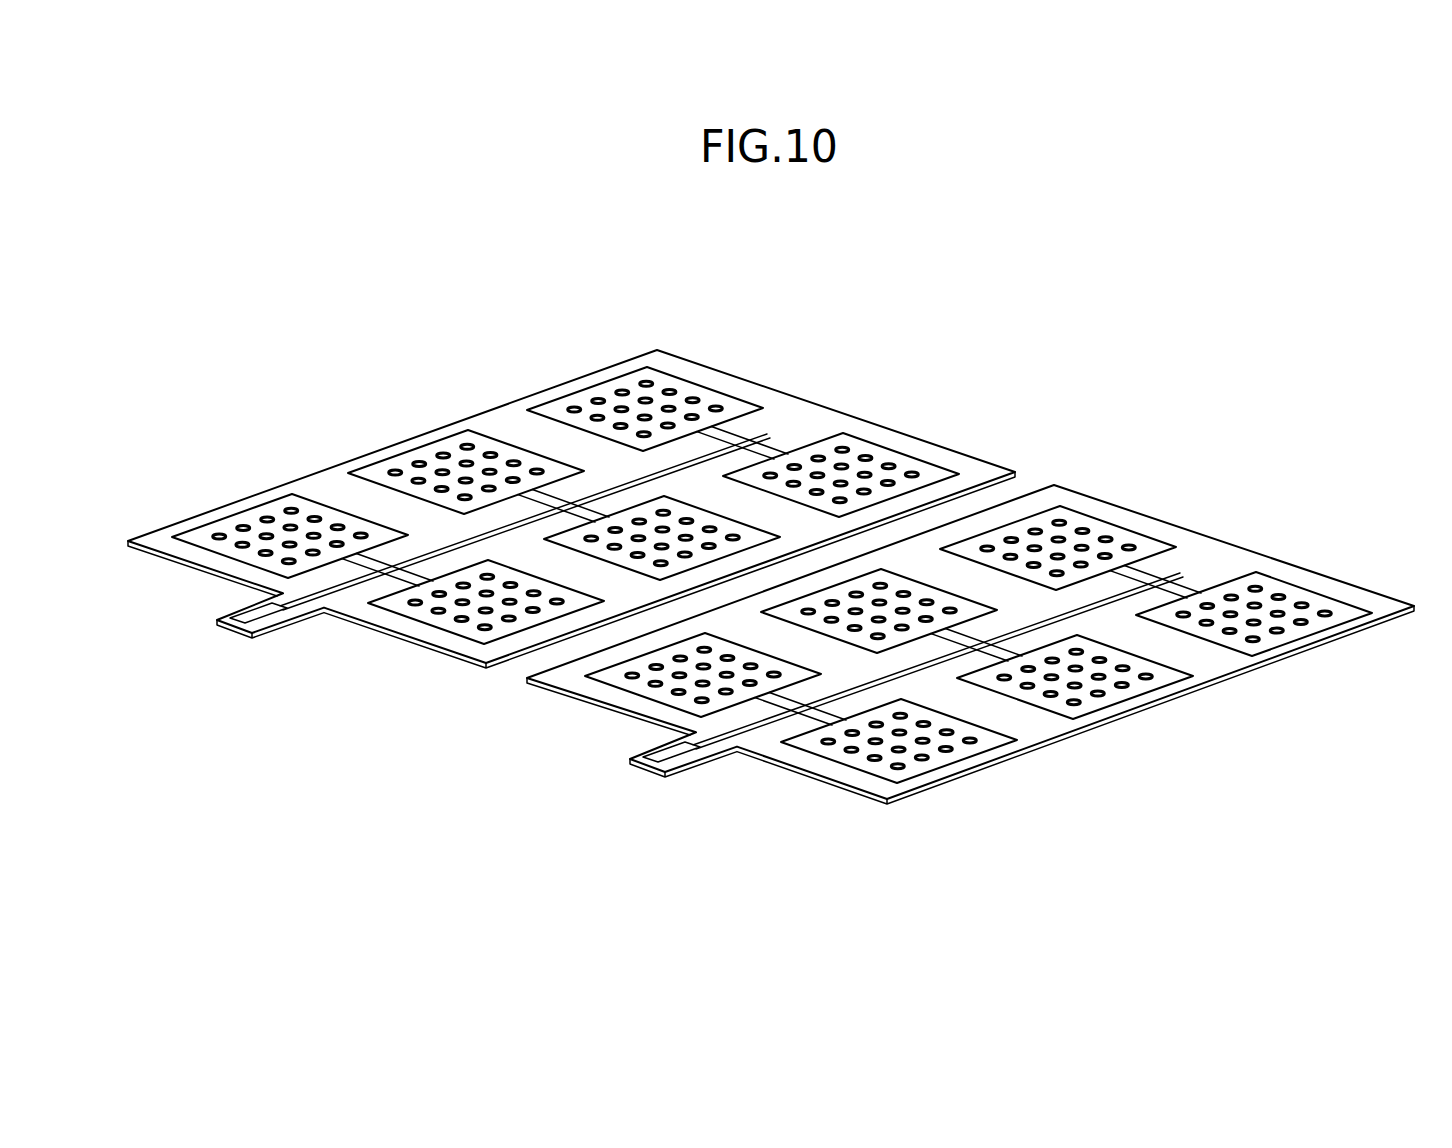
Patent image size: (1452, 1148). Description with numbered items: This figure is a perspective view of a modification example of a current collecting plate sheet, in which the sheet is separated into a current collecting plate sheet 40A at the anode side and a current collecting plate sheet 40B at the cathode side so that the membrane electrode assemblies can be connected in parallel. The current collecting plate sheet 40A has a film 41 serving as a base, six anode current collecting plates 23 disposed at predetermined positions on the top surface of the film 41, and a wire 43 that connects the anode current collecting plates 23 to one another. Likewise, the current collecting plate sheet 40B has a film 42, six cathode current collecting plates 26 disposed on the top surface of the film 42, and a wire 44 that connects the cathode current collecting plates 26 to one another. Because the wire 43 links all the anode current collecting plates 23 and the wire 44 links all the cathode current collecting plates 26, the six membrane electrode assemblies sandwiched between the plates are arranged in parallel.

The current collecting plate sheet 40A is at (970, 607).
The current collecting plate sheet 40B is at (571, 491).
The film 41 is at (1097, 720).
The film 42 is at (506, 420).
The wire 43 is at (743, 718).
The wire 44 is at (327, 582).
The anode current collecting plate 23 is at (1098, 523).
The cathode current collecting plate 26 is at (257, 511).